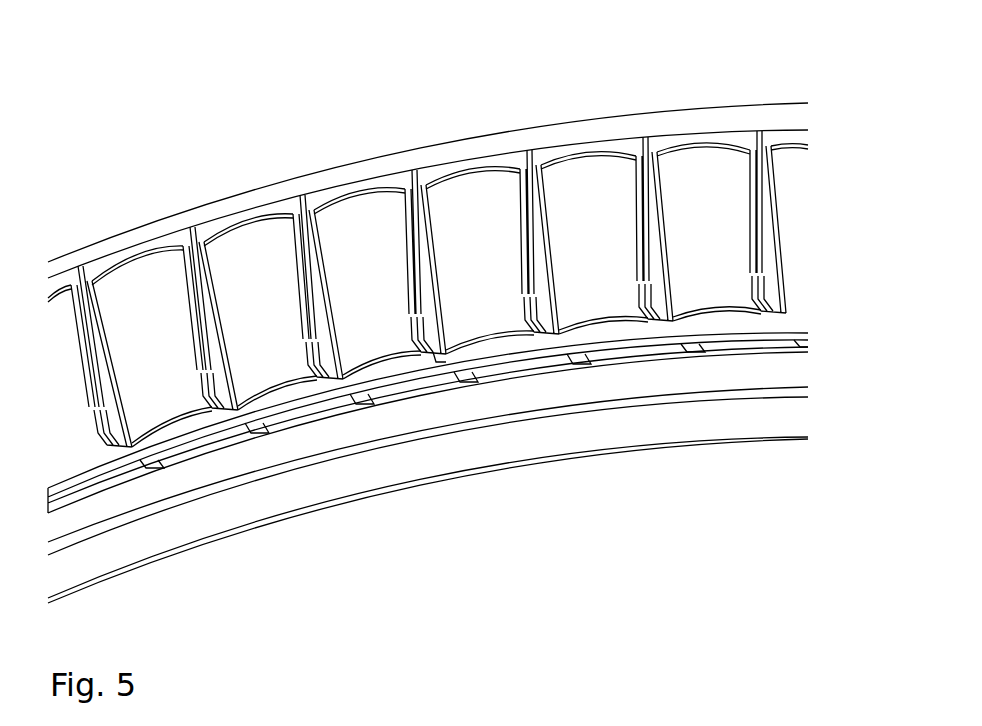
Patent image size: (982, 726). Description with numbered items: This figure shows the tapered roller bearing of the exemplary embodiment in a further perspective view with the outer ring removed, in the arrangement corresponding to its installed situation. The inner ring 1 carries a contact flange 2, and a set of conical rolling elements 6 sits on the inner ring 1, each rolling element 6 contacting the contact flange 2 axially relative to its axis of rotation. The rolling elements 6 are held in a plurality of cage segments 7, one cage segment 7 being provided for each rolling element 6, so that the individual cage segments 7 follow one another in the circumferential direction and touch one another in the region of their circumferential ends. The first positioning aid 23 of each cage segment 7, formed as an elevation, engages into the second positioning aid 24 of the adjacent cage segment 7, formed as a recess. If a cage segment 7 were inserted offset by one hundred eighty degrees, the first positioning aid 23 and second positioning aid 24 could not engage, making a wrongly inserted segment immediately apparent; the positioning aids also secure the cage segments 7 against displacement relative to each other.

The inner ring 1 is at (813, 393).
The contact flange 2 is at (786, 372).
The rolling element 6 is at (584, 172).
The cage segment 7 is at (485, 149).
The first positioning aid 23 is at (433, 372).
The second positioning aid 24 is at (433, 372).